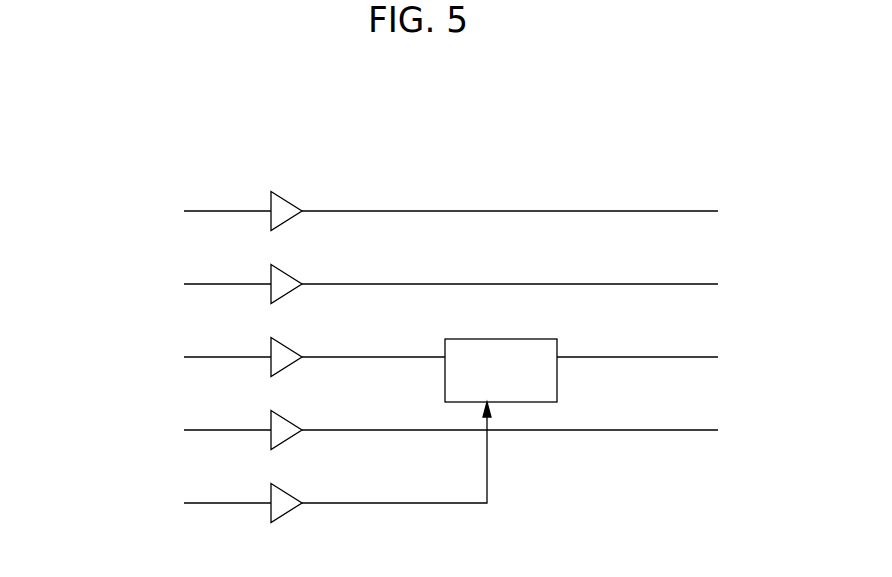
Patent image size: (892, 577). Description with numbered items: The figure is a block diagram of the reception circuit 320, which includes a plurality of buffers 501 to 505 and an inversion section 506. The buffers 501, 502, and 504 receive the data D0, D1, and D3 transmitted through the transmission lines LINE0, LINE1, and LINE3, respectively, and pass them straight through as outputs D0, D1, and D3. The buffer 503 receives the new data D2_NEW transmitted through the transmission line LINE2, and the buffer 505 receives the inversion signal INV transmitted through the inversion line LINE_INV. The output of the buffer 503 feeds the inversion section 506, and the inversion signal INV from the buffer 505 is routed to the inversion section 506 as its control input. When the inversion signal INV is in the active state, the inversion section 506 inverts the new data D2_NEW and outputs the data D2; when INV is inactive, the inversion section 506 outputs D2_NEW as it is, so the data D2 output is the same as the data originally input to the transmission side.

The reception circuit 320 is at (562, 148).
The buffer 501 is at (284, 198).
The buffer 502 is at (284, 271).
The buffer 503 is at (284, 344).
The buffer 504 is at (284, 417).
The buffer 505 is at (284, 490).
The inversion section 506 is at (507, 339).